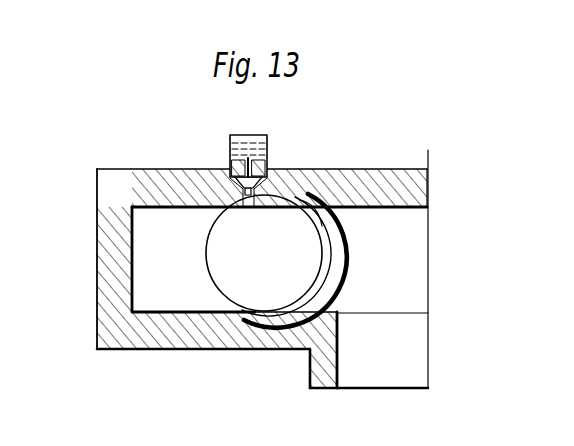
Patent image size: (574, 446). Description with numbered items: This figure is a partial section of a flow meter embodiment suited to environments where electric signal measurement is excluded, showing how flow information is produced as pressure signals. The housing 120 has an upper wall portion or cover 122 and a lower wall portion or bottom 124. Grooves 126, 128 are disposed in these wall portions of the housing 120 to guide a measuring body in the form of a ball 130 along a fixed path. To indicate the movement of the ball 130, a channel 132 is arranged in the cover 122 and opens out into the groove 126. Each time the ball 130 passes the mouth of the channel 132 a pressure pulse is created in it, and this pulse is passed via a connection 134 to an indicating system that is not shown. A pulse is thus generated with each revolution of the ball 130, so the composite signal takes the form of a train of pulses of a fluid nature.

The housing 120 is at (348, 167).
The upper wall portion or cover 122 is at (413, 186).
The lower wall portion or bottom 124 is at (160, 332).
The groove 126 is at (318, 227).
The groove 128 is at (328, 287).
The ball 130 is at (258, 296).
The channel 132 is at (241, 192).
The connection 134 is at (268, 139).